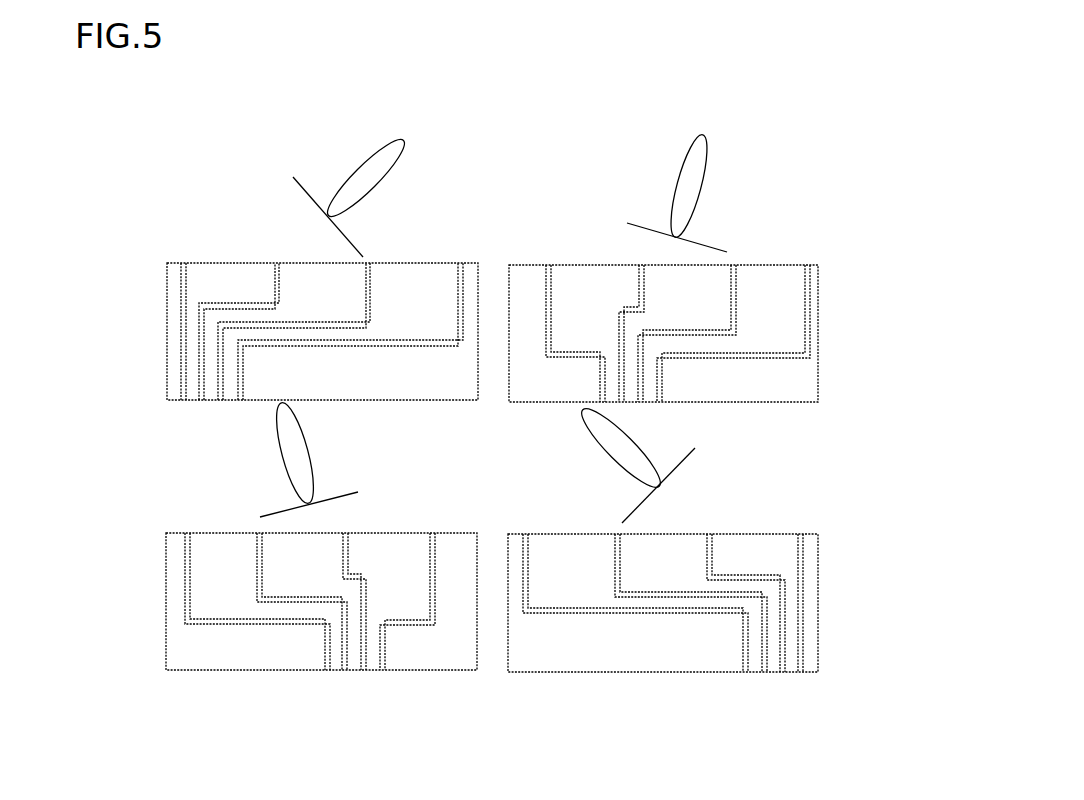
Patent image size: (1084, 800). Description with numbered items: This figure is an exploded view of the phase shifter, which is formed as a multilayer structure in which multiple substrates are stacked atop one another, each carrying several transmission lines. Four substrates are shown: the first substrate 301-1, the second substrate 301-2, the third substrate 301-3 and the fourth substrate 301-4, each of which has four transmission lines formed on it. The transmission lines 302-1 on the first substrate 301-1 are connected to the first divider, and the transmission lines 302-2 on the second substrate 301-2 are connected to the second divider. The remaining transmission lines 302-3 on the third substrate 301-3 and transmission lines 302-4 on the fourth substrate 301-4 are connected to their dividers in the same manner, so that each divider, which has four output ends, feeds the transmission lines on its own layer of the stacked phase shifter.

The first substrate 301-1 is at (271, 364).
The second substrate 301-2 is at (713, 310).
The third substrate 301-3 is at (272, 632).
The fourth substrate 301-4 is at (722, 578).
The transmission lines on the first substrate 302-1 is at (245, 392).
The transmission lines on the second substrate 302-2 is at (738, 302).
The transmission lines on the third substrate 302-3 is at (408, 627).
The transmission lines on the fourth substrate 302-4 is at (713, 542).